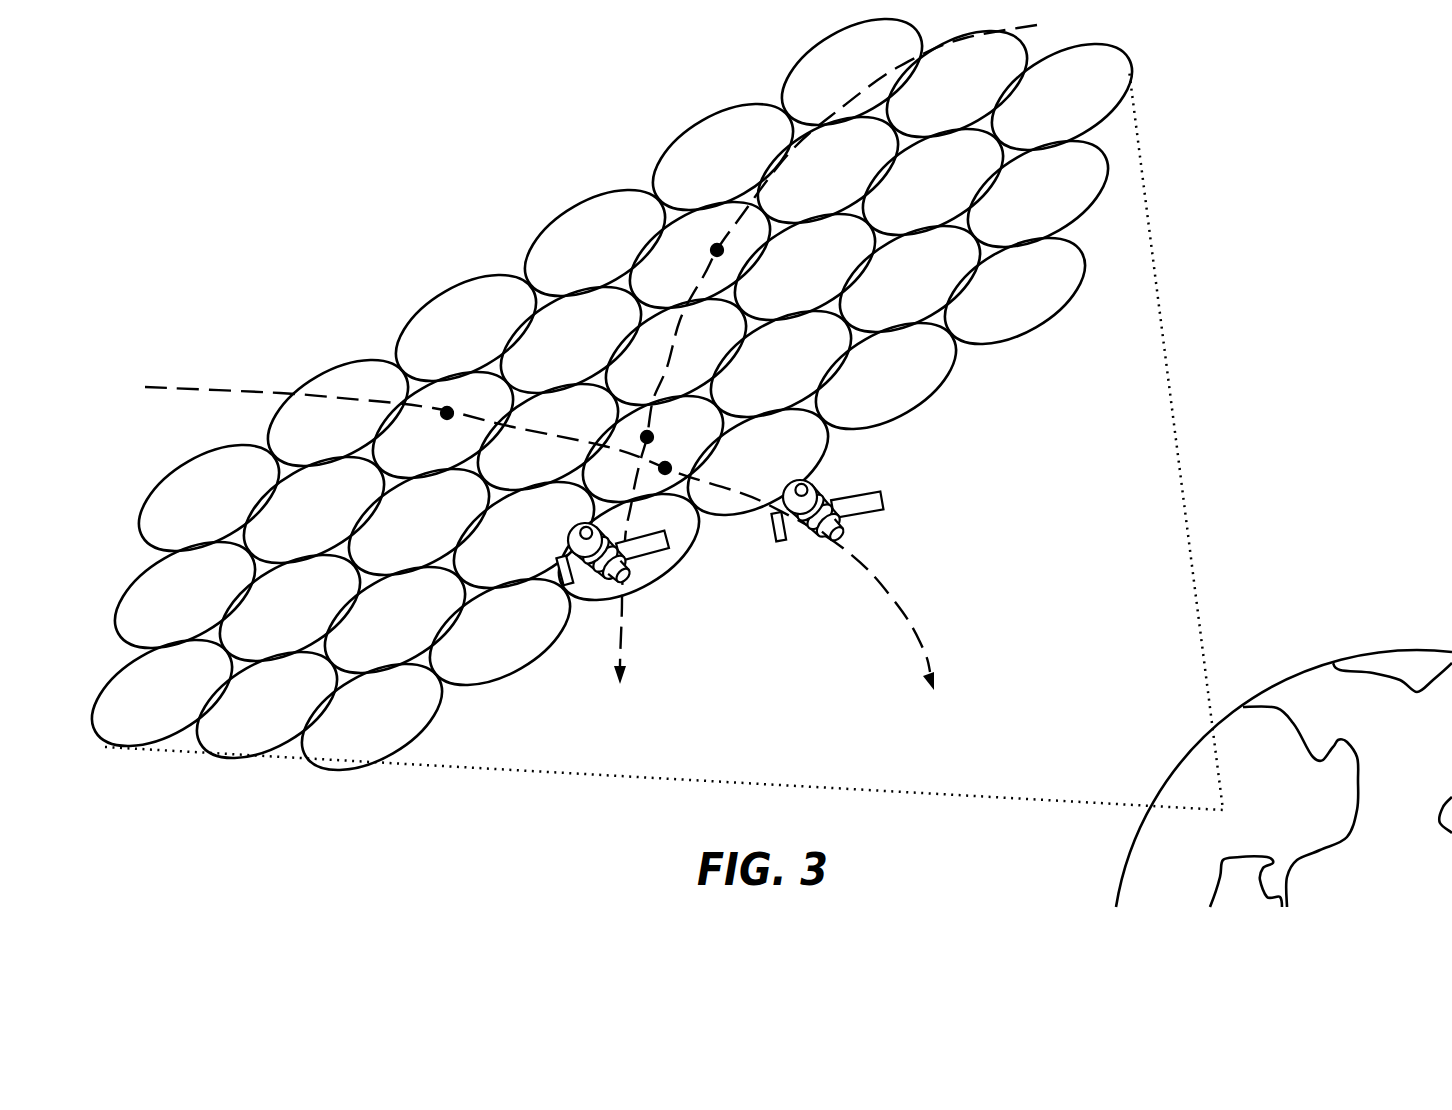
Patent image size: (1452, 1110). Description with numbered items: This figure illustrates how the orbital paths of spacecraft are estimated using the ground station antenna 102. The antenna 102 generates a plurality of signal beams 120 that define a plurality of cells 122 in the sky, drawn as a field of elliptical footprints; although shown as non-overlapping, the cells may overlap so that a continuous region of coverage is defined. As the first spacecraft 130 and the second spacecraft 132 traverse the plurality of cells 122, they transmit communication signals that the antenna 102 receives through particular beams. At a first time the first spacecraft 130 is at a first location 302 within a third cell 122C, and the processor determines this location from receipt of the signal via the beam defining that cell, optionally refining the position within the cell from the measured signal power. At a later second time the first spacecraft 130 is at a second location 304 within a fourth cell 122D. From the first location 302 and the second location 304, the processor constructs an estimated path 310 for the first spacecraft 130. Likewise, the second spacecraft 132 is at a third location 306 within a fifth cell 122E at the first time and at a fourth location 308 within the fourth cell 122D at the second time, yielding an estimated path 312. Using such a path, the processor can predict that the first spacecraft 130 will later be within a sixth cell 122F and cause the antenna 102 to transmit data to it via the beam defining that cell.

The antenna 102 is at (1226, 810).
The plurality of signal beams 120 is at (1222, 407).
The plurality of cells 122 is at (405, 158).
The third cell 122C is at (653, 187).
The fourth cell 122D is at (733, 398).
The fifth cell 122E is at (398, 364).
The sixth cell 122F is at (697, 530).
The first spacecraft 130 is at (648, 567).
The second spacecraft 132 is at (866, 482).
The first location 302 is at (712, 251).
The second location 304 is at (650, 432).
The third location 306 is at (447, 407).
The fourth location 308 is at (672, 468).
The estimated path 310 is at (624, 641).
The estimated path 312 is at (893, 600).